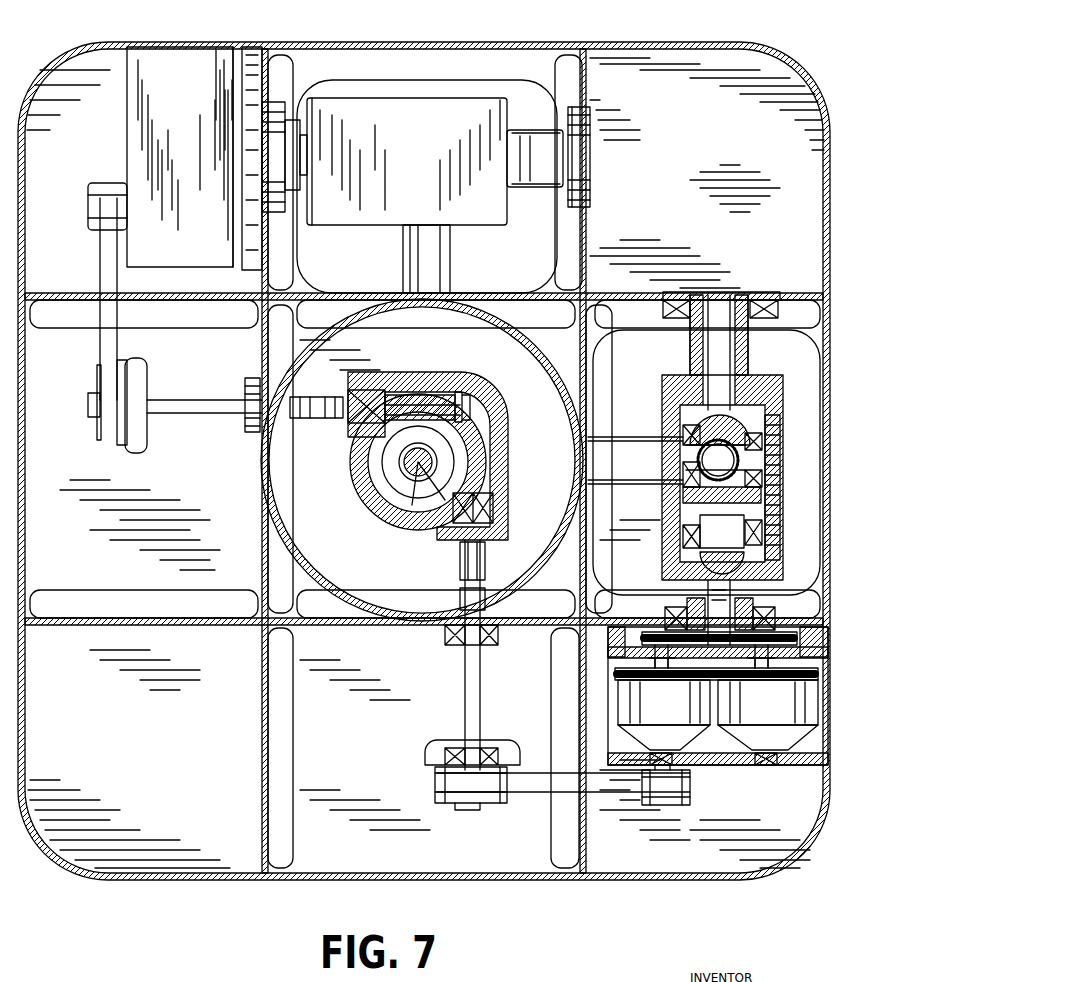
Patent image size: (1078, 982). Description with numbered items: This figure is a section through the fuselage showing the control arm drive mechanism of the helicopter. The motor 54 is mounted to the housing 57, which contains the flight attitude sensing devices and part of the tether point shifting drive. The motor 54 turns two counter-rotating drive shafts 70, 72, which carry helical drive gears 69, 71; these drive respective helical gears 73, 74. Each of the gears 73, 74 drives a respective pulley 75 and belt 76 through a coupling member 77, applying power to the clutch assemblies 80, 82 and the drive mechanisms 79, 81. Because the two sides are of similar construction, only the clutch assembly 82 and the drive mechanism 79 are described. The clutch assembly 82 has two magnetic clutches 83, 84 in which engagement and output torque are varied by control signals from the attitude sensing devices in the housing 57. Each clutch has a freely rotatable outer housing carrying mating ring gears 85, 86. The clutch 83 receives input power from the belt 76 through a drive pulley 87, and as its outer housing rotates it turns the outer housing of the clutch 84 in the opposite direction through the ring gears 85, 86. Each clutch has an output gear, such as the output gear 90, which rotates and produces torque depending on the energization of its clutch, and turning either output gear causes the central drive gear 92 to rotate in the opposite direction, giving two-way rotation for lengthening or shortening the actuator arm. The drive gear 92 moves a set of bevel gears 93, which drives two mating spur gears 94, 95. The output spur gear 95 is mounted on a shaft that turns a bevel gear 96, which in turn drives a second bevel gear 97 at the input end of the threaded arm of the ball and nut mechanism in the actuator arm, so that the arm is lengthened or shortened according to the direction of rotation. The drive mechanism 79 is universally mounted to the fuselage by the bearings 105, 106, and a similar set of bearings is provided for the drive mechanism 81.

The housing 57 is at (657, 44).
The clutch assembly 80 is at (200, 165).
The drive mechanism 81 is at (360, 172).
The belt 76 is at (110, 343).
The pulley 75 is at (95, 378).
The coupling member 77 is at (318, 402).
The motor 54 is at (348, 600).
The helical gear 74 is at (497, 450).
The helical drive gear 69 is at (385, 470).
The drive shaft 70 is at (412, 465).
The helical drive gear 71 is at (440, 450).
The drive shaft 72 is at (430, 496).
The helical gear 73 is at (420, 392).
The drive mechanism 79 is at (752, 372).
The bevel gear 96 is at (722, 437).
The second bevel gear 97 is at (700, 412).
The bearing 106 is at (765, 487).
The output spur gear 95 is at (780, 420).
The spur gear 94 is at (775, 512).
The bevel gears 93 is at (675, 540).
The bearing 105 is at (685, 292).
The central drive gear 92 is at (770, 612).
The clutch assembly 82 is at (700, 767).
The output gear 90 is at (645, 645).
The ring gear 85 is at (625, 675).
The ring gear 86 is at (768, 680).
The clutch 83 is at (671, 723).
The clutch 84 is at (771, 723).
The drive pulley 87 is at (655, 803).